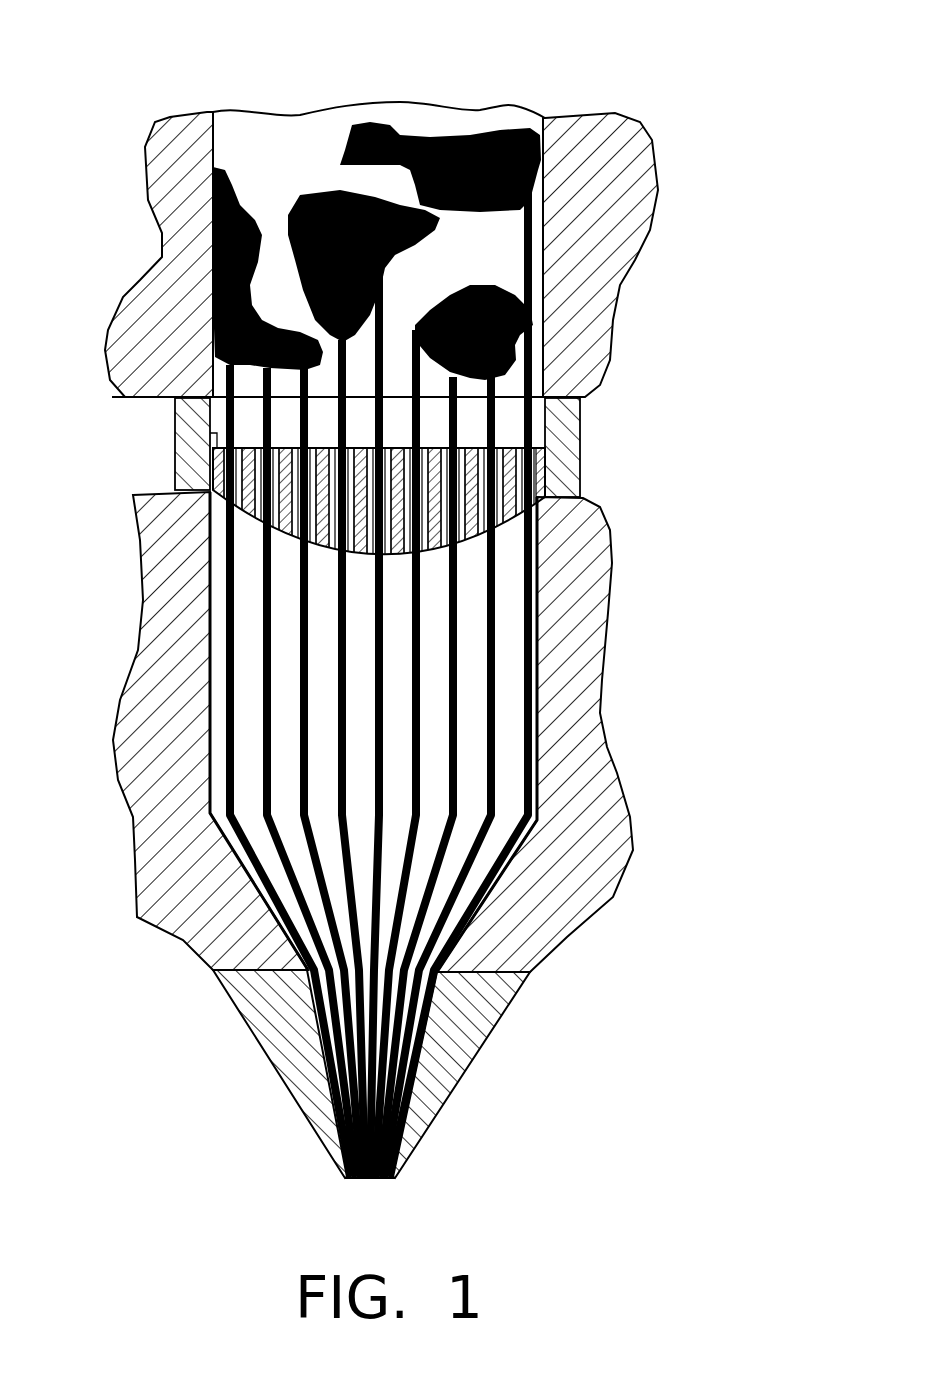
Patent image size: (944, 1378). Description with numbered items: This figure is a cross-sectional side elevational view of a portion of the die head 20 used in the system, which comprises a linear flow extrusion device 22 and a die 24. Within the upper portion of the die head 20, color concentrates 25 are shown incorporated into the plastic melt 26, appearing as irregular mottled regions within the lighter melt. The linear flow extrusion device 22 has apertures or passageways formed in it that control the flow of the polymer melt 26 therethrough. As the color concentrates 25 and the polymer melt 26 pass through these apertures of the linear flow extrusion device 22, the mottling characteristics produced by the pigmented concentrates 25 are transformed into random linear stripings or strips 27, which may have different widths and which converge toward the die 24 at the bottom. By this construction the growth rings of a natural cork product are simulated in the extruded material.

The die head 20 is at (652, 626).
The linear flow extrusion device 22 is at (582, 446).
The die 24 is at (460, 1097).
The color concentrates 25 is at (485, 138).
The plastic melt 26 is at (272, 148).
The random linear stripings 27 is at (457, 782).